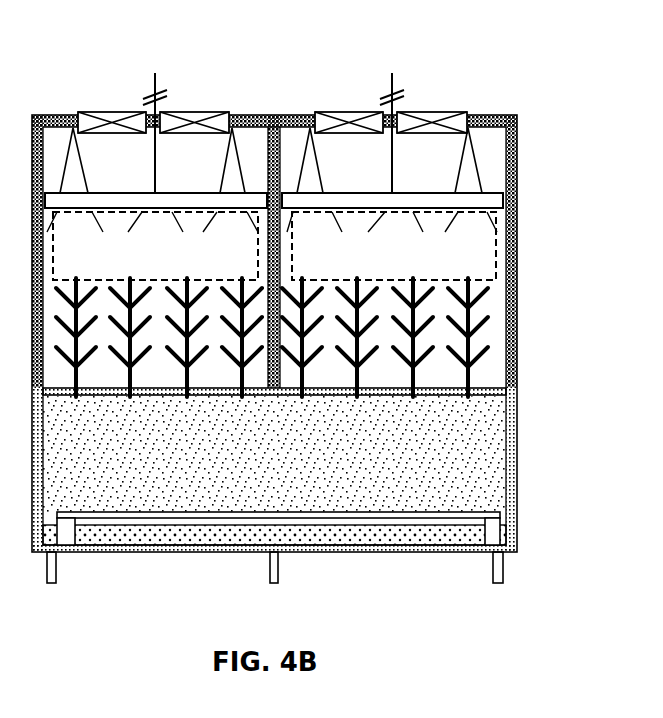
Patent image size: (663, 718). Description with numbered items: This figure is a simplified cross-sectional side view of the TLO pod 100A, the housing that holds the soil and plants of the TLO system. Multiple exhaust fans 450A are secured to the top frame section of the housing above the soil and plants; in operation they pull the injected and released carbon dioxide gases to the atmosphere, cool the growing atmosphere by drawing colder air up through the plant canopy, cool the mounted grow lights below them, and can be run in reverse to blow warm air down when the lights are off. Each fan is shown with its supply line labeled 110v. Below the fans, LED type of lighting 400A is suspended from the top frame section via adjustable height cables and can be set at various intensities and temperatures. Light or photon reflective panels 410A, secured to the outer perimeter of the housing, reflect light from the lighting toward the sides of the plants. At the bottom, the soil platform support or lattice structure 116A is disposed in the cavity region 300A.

The TLO pod 100A is at (279, 55).
The power supply line 110v is at (278, 119).
The exhaust fans 450A is at (105, 112).
The LED type of lighting 400A is at (431, 200).
The light or photon reflective panels 410A is at (475, 252).
The soil platform support or lattice structure 116A is at (238, 517).
The cavity region 300A is at (384, 536).